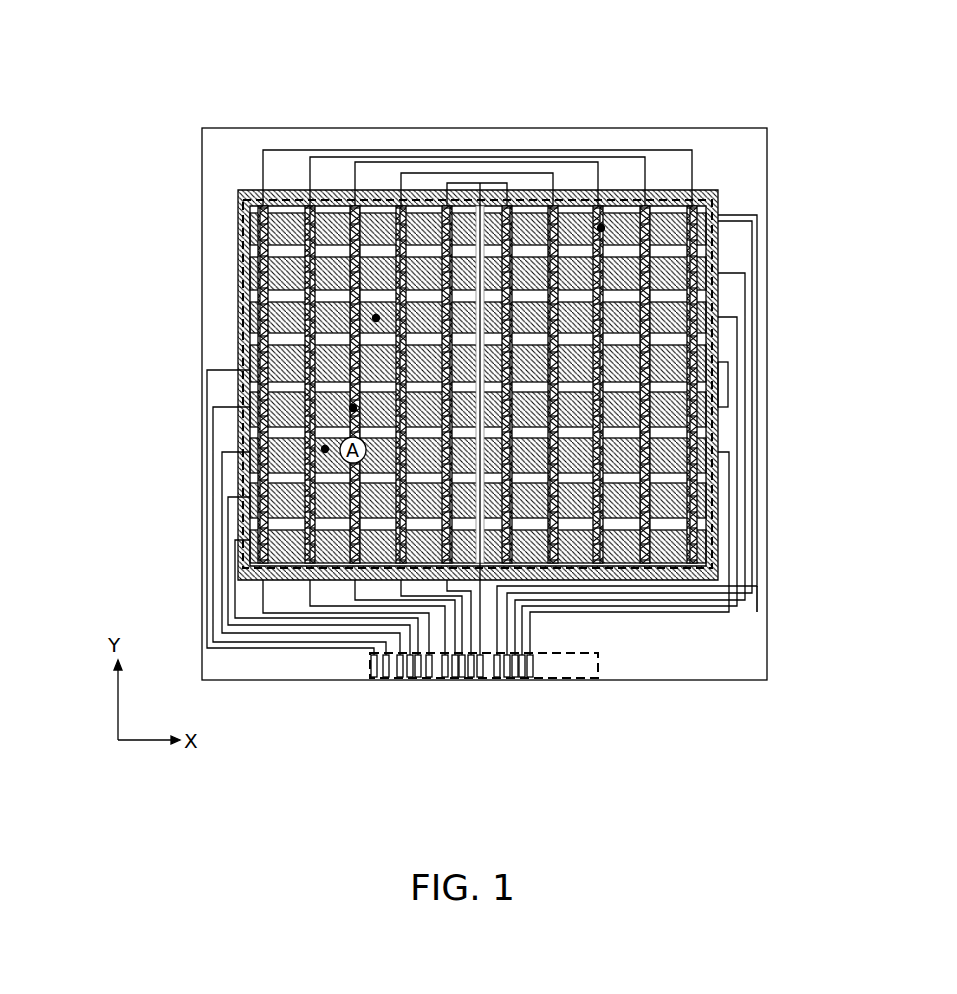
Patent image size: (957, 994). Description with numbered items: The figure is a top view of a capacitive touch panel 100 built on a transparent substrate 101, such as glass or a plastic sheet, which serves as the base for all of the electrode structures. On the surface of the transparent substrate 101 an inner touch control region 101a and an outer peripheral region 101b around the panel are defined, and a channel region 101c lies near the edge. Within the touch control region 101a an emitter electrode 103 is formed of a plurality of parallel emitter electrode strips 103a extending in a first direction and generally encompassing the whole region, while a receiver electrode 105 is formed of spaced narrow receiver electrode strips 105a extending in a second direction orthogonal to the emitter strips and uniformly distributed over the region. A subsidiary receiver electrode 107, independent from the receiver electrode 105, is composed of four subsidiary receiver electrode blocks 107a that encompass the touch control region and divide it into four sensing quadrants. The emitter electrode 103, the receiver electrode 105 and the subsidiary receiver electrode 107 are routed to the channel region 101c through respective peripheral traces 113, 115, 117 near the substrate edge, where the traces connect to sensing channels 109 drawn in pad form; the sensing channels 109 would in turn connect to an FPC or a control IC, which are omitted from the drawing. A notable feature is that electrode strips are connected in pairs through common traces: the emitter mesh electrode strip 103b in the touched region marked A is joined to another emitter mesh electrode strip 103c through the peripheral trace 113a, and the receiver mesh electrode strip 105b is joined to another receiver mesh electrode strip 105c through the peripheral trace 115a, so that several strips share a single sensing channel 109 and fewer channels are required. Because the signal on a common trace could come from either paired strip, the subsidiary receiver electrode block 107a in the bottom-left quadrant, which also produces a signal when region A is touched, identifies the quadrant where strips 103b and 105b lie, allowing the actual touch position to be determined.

The capacitive touch panel 100 is at (843, 104).
The transparent substrate 101 is at (768, 652).
The touch control region 101a is at (718, 552).
The peripheral region 101b is at (758, 612).
The channel region 101c is at (527, 730).
The emitter electrode 103 is at (527, 499).
The emitter electrode strip 103a is at (797, 752).
The emitter mesh electrode strip 103b is at (325, 449).
The emitter mesh electrode strip 103c is at (376, 318).
The receiver electrode 105 is at (396, 382).
The receiver electrode strip 105a is at (244, 222).
The receiver mesh electrode strip 105b is at (353, 408).
The receiver mesh electrode strip 105c is at (601, 228).
The subsidiary receiver electrode 107 is at (698, 423).
The subsidiary receiver electrode block 107a is at (718, 213).
The sensing channel 109 is at (407, 680).
The peripheral trace 113 is at (309, 627).
The peripheral trace 113a is at (682, 438).
The peripheral trace 115 is at (364, 608).
The peripheral trace 115a is at (481, 150).
The peripheral trace 117 is at (248, 648).